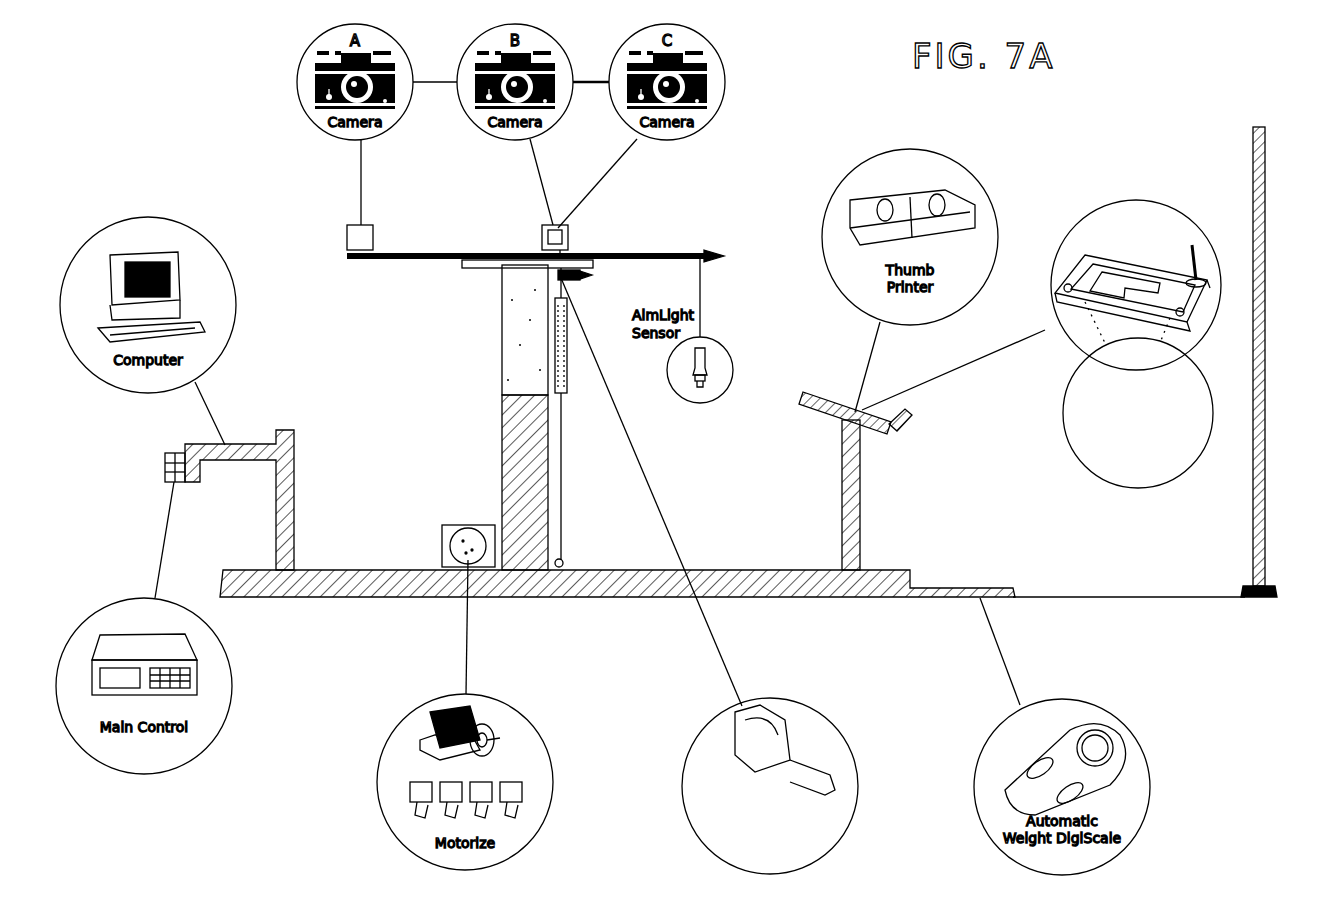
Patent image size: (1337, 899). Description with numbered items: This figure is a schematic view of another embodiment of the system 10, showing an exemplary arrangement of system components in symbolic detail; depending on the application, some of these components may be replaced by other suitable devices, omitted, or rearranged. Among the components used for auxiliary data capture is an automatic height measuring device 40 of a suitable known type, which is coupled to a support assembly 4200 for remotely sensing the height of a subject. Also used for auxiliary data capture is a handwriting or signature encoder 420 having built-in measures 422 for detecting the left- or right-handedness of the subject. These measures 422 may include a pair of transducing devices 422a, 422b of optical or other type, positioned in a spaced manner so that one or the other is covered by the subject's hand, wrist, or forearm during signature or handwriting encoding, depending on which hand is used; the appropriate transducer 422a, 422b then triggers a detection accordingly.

The system 10 is at (1208, 70).
The automatic height measuring device 40 is at (828, 736).
The signature encoder 420 is at (1137, 215).
The built-in measures 422 is at (1140, 488).
The transducing device 422a is at (1192, 317).
The transducing device 422b is at (1062, 300).
The support assembly 4200 is at (470, 323).